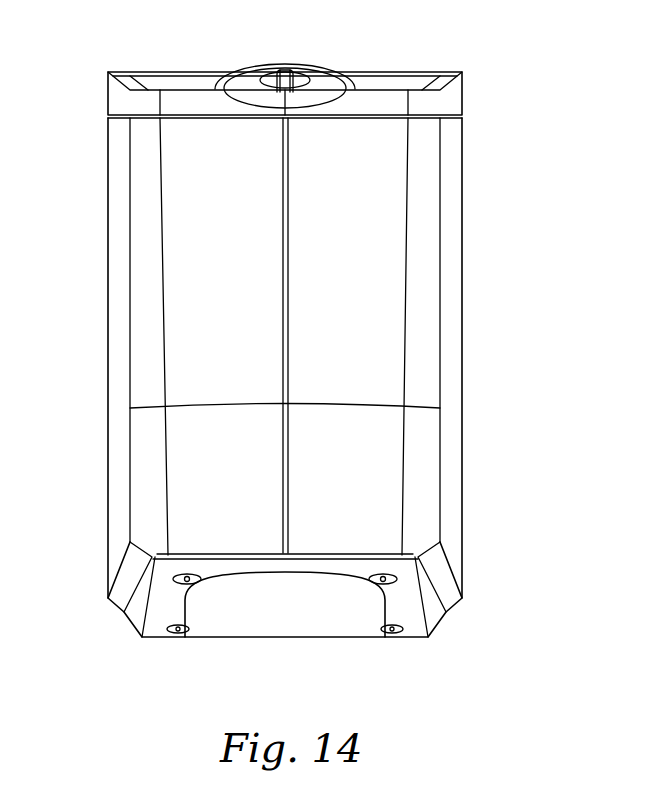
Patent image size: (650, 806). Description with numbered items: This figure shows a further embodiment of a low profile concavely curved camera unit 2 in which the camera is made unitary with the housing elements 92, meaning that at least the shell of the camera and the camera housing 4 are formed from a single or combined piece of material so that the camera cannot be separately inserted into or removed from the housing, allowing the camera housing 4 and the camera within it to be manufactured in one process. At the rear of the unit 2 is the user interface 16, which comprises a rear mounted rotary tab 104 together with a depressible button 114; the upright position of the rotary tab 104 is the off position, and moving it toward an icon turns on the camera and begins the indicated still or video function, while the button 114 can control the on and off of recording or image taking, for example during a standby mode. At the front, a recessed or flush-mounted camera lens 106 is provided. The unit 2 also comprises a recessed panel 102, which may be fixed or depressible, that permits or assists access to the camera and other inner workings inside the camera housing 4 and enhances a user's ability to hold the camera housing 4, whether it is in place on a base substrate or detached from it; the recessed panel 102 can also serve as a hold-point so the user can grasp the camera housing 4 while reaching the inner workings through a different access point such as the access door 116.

The camera unit 2 is at (487, 241).
The camera housing 4 is at (450, 497).
The user interface 16 is at (360, 62).
The housing elements 92 is at (393, 170).
The recessed panel 102 is at (213, 238).
The rotary tab 104 is at (289, 70).
The camera lens 106 is at (207, 611).
The button 114 is at (247, 77).
The access door 116 is at (380, 342).